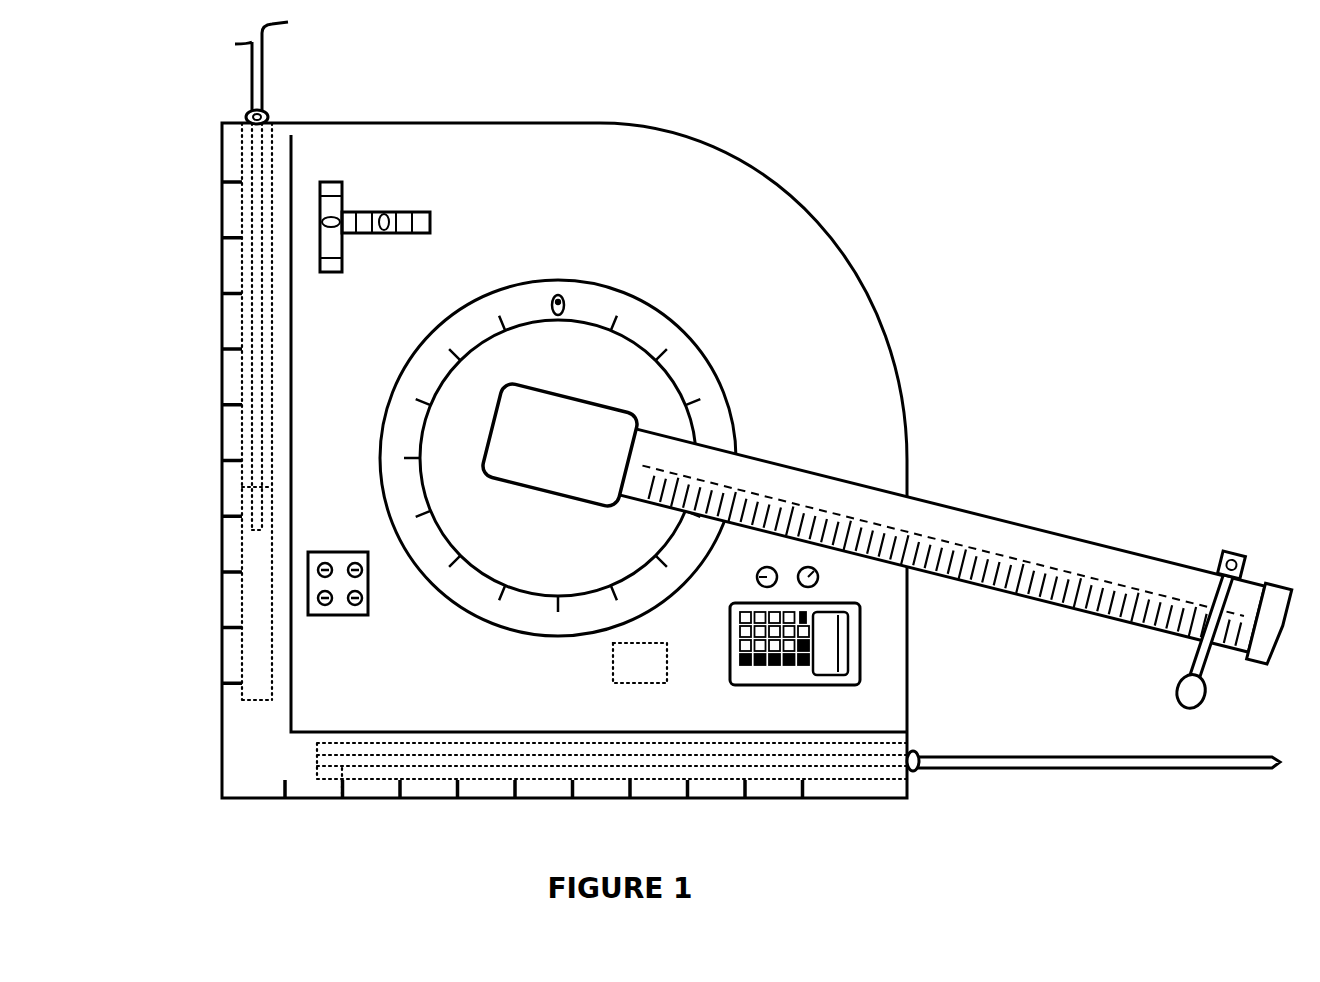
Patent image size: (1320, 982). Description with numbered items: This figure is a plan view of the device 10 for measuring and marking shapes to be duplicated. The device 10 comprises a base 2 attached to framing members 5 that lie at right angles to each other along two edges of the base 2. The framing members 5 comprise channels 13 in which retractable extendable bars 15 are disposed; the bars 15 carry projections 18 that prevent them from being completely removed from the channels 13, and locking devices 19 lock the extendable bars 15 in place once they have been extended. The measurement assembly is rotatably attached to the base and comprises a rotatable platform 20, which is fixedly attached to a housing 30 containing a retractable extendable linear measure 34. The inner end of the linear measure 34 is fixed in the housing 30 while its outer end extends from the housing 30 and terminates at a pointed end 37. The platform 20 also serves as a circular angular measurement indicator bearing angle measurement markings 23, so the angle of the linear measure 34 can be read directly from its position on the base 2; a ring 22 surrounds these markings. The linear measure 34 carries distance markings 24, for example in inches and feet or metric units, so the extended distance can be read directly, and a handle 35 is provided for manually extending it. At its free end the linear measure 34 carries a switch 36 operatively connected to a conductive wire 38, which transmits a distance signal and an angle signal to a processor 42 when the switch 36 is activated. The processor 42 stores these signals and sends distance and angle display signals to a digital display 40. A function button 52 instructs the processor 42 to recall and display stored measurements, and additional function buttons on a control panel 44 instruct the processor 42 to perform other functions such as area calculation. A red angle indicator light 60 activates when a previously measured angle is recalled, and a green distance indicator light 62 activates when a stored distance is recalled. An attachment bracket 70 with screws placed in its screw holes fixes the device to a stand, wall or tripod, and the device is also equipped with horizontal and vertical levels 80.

The base 2 is at (880, 340).
The framing members 5 is at (232, 428).
The device 10 is at (1018, 150).
The channels 13 is at (413, 768).
The retractable extendable bars 15 is at (236, 302).
The projections 18 is at (240, 493).
The locking devices 19 is at (268, 115).
The rotatable platform 20 is at (668, 398).
The outer protractor ring 22 is at (683, 330).
The angle measurement markings 23 is at (575, 301).
The distance markings 24 is at (1010, 578).
The housing 30 is at (550, 395).
The linear measure 34 is at (927, 517).
The handle 35 is at (1178, 683).
The switch 36 is at (1228, 560).
The pointed end 37 is at (1278, 585).
The conductive wire 38 is at (1118, 580).
The digital display 40 is at (862, 665).
The processor 42 is at (633, 653).
The control panel 44 is at (755, 650).
The function button 52 is at (832, 670).
The angle indicator light 60 is at (757, 577).
The distance indicator light 62 is at (820, 572).
The attachment bracket 70 is at (337, 613).
The levels 80 is at (400, 213).